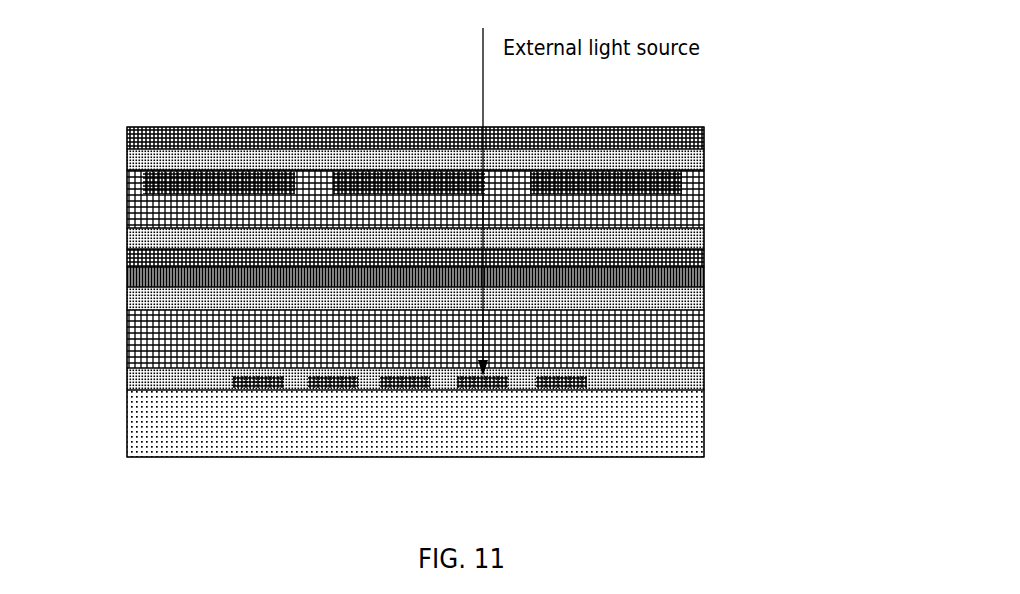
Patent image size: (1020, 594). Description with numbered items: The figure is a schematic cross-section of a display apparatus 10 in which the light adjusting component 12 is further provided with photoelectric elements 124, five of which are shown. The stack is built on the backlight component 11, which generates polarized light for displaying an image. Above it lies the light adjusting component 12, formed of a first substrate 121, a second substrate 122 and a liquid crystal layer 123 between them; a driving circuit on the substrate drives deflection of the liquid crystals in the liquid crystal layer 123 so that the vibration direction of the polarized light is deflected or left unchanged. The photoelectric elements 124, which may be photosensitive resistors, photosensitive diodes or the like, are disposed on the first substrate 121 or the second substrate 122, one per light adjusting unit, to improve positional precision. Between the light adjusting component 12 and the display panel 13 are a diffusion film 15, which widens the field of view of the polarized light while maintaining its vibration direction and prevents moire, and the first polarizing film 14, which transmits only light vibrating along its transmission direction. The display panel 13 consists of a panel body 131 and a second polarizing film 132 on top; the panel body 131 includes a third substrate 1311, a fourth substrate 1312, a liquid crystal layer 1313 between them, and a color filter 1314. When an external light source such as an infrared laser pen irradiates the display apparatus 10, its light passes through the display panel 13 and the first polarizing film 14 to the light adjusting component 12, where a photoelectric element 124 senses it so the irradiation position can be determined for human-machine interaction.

The display apparatus 10 is at (133, 90).
The backlight component 11 is at (134, 417).
The light adjusting component 12 is at (117, 295).
The first substrate 121 is at (690, 303).
The second substrate 122 is at (700, 379).
The liquid crystal layer 123 is at (700, 341).
The photoelectric element 124 is at (563, 389).
The display panel 13 is at (117, 128).
The panel body 131 is at (827, 153).
The third substrate 1311 is at (690, 164).
The fourth substrate 1312 is at (688, 241).
The liquid crystal layer 1313 is at (692, 216).
The color filter 1314 is at (692, 191).
The second polarizing film 132 is at (705, 128).
The first polarizing film 14 is at (127, 260).
The diffusion film 15 is at (127, 282).